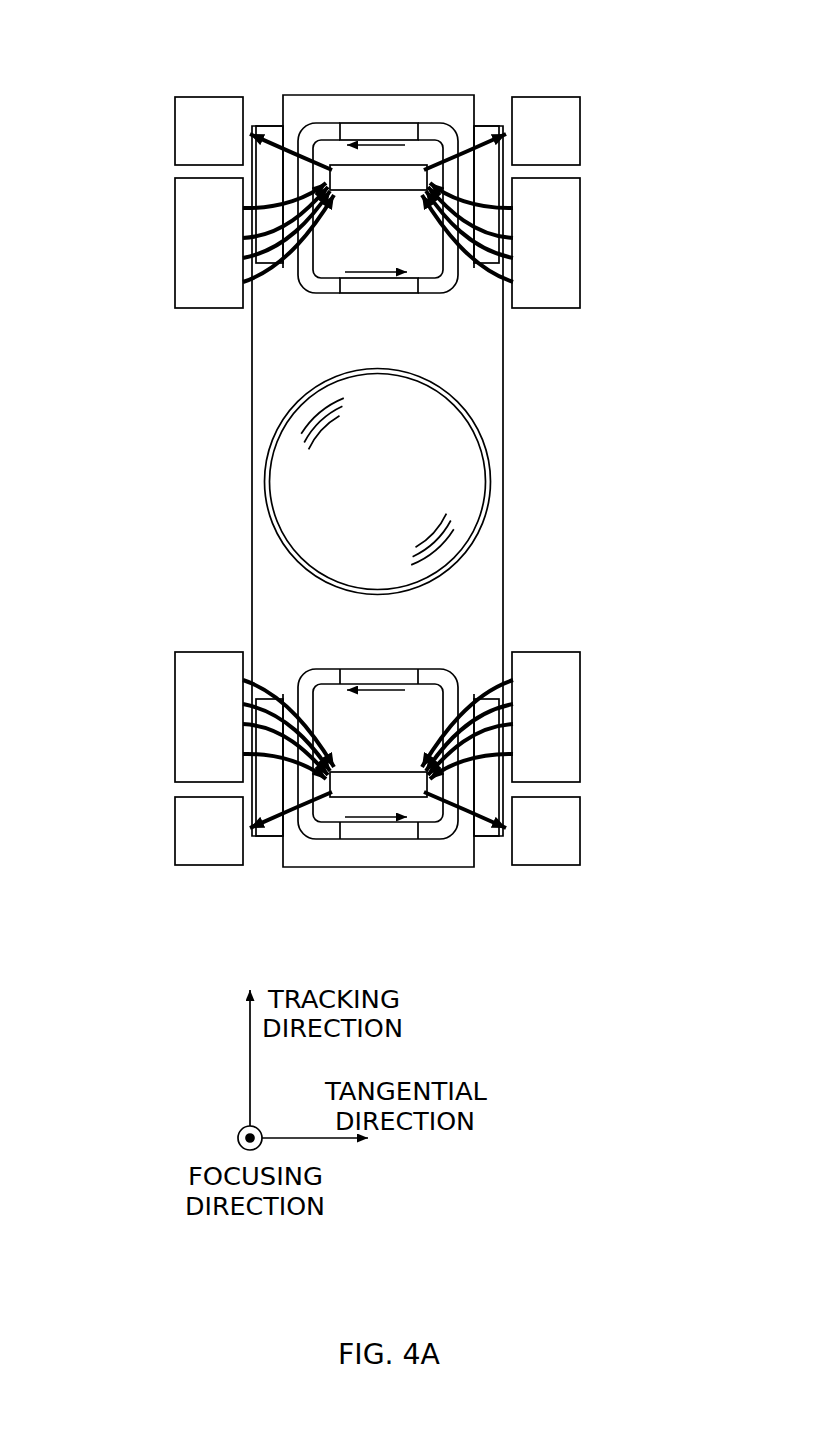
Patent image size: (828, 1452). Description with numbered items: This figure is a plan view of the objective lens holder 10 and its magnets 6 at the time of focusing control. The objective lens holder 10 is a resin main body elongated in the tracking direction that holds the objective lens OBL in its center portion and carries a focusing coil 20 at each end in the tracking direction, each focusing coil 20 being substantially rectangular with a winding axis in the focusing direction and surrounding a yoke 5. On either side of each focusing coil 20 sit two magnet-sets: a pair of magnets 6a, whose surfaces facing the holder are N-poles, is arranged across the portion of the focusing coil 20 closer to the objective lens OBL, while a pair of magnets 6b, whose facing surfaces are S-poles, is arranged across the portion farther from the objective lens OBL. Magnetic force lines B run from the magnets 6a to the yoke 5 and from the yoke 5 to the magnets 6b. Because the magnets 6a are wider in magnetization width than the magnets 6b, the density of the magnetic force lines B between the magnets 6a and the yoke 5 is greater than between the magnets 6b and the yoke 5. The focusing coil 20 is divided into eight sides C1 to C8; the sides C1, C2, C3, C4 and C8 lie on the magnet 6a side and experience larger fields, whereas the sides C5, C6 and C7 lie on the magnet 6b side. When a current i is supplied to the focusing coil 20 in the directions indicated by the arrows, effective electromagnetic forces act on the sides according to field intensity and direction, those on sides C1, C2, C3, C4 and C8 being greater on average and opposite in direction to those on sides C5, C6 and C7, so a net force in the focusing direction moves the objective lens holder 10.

The yoke 5 is at (386, 192).
The magnets 6 is at (378, 483).
The magnets 6a is at (175, 262).
The magnets 6b is at (175, 110).
The objective lens holder 10 is at (517, 405).
The focusing coil 20 is at (356, 123).
The magnetic force lines B is at (271, 270).
The current i is at (398, 144).
The side C1 is at (438, 290).
The side C2 is at (379, 301).
The side C3 is at (319, 290).
The side C4 is at (313, 244).
The side C5 is at (319, 130).
The side C6 is at (379, 120).
The side C7 is at (438, 130).
The side C8 is at (443, 244).
The objective lens OBL is at (378, 482).